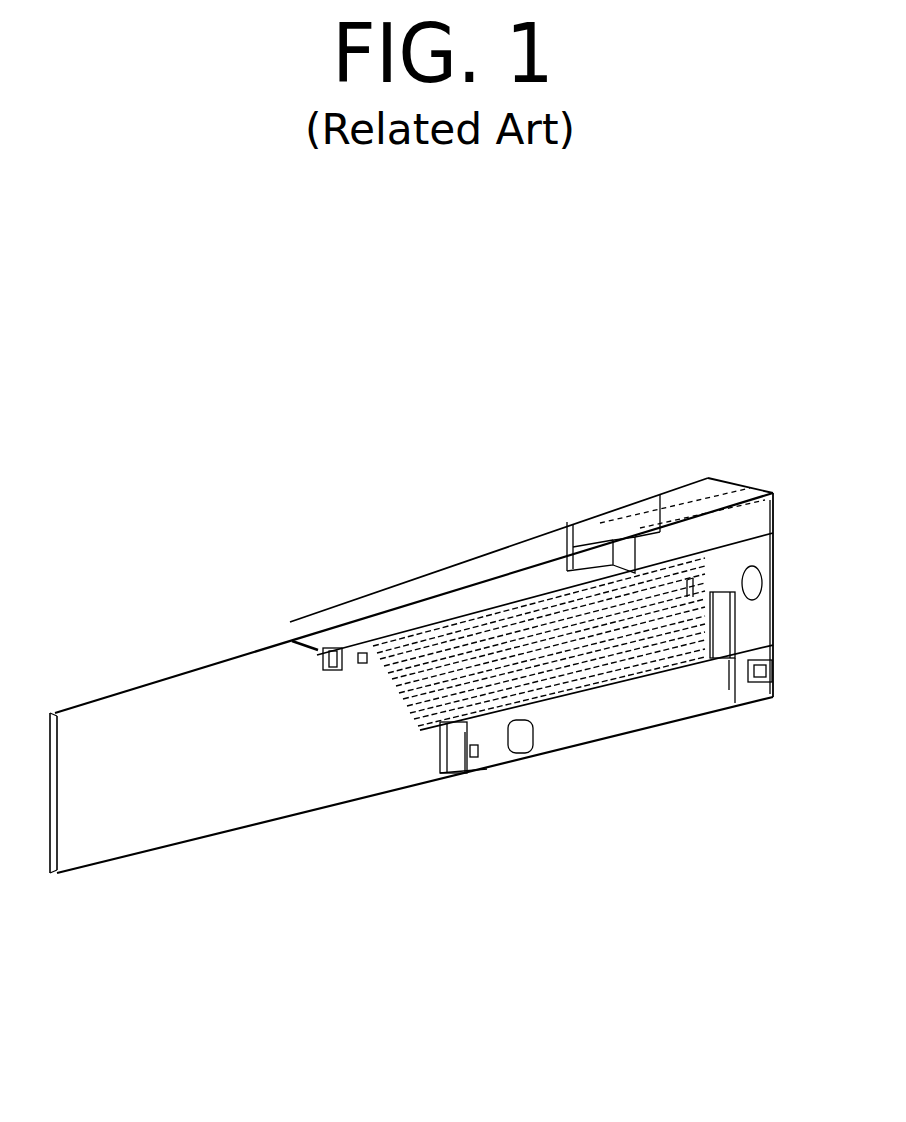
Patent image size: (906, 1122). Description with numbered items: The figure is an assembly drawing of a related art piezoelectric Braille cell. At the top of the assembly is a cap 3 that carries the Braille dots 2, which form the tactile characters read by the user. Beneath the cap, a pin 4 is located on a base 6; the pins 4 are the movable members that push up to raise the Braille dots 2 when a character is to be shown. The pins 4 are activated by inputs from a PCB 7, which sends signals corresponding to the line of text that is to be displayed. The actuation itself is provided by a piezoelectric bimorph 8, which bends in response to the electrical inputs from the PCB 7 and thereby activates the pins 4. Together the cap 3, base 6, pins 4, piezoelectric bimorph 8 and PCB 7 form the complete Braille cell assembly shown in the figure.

The Braille dots 2 is at (615, 488).
The cap 3 is at (534, 528).
The pin 4 is at (724, 643).
The base 6 is at (656, 721).
The PCB 7 is at (270, 783).
The piezoelectric bimorph 8 is at (565, 701).